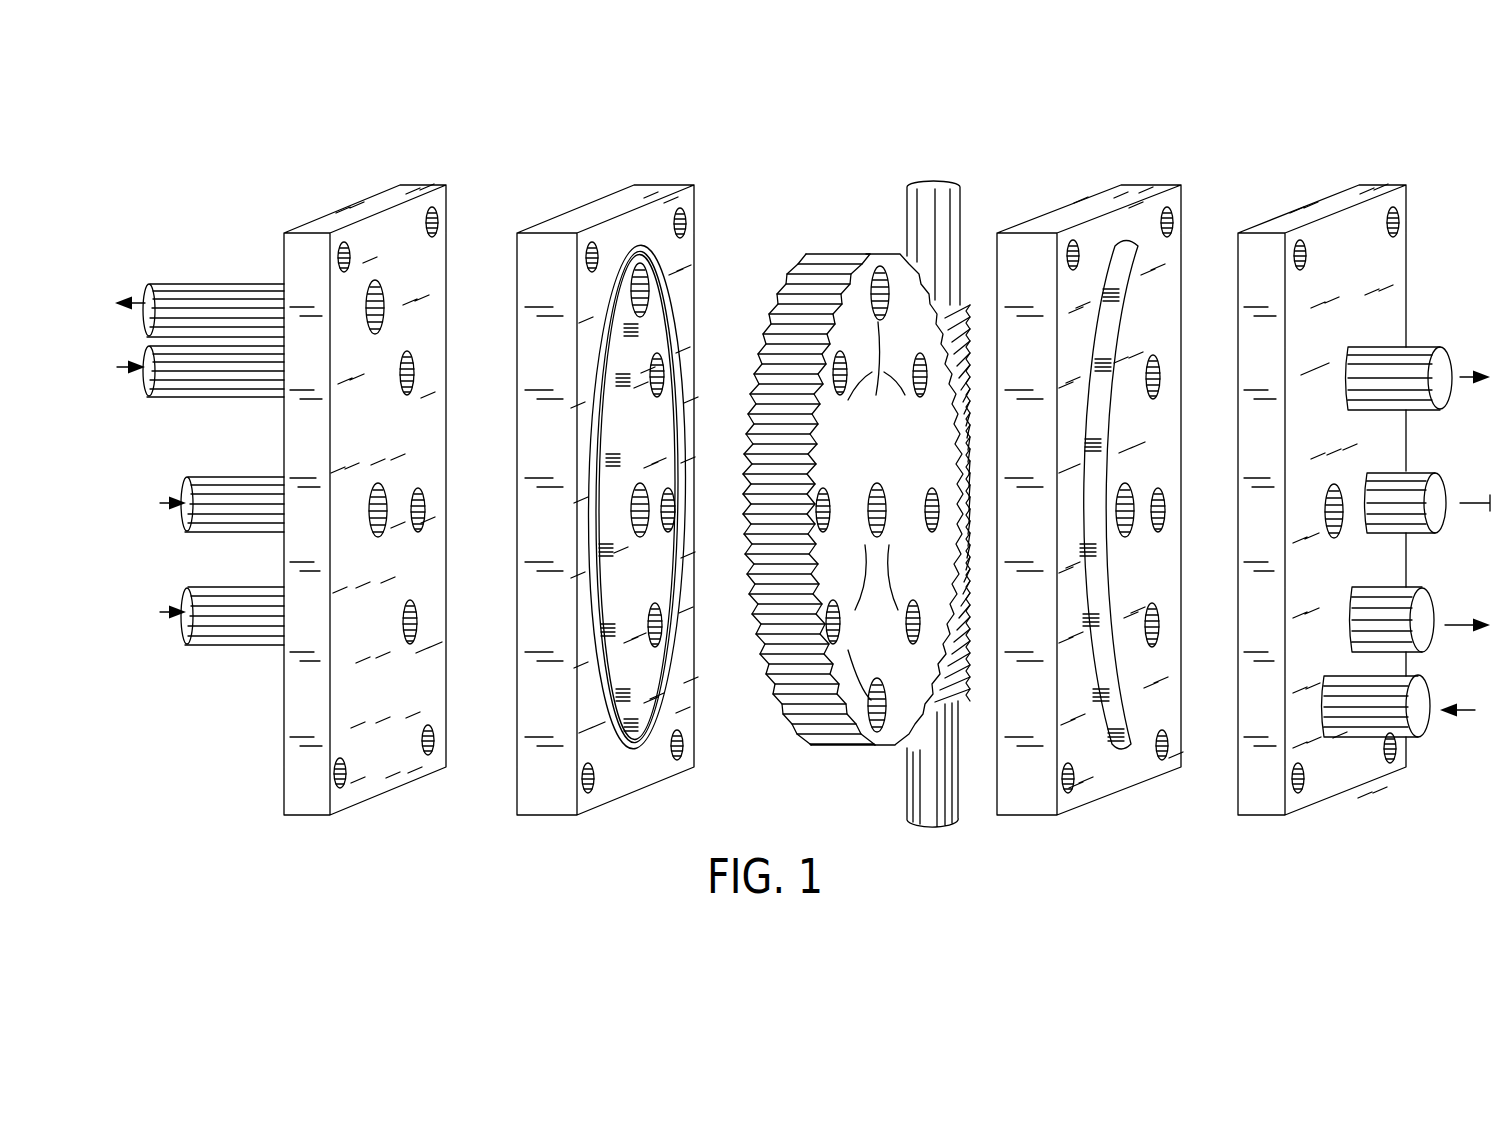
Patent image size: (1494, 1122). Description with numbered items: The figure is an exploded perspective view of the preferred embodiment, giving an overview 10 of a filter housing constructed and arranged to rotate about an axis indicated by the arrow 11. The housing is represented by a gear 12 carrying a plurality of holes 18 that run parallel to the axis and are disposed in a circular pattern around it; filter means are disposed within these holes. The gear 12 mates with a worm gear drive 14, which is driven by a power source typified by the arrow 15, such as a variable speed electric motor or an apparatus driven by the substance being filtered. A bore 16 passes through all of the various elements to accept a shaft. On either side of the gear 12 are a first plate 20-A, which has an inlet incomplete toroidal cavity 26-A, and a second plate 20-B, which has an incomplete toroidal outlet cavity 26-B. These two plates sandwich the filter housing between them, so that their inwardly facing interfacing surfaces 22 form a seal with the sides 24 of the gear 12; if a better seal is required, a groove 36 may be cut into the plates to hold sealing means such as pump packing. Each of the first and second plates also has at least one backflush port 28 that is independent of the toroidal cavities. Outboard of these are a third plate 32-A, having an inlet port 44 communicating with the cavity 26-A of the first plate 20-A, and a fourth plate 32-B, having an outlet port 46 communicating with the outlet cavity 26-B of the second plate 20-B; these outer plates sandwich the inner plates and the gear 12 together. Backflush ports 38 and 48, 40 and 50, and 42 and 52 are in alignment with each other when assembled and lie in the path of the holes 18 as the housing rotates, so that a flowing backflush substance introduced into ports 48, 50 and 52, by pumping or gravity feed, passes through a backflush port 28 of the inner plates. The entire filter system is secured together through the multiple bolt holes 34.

The filter housing overview 10 is at (820, 220).
The axis arrow 11 is at (872, 510).
The gear 12 is at (869, 746).
The worm gear drive 14 is at (945, 734).
The power source arrow 15 is at (938, 180).
The bore 16 is at (374, 536).
The holes 18 is at (912, 380).
The first plate 20-A is at (1140, 790).
The second plate 20-B is at (535, 792).
The interfacing surfaces 22 is at (650, 780).
The sides of gear 24 is at (740, 573).
The inlet incomplete toroidal cavity 26-A is at (1110, 684).
The outlet incomplete toroidal cavity 26-B is at (645, 738).
The backflush port 28 is at (409, 393).
The third plate 32-A is at (1345, 790).
The fourth plate 32-B is at (400, 788).
The bolt holes 34 is at (426, 226).
The groove 36 is at (682, 428).
The backflush port 38 is at (1416, 352).
The backflush port 40 is at (1416, 480).
The backflush port 42 is at (1412, 598).
The inlet port 44 is at (1414, 732).
The outlet port 46 is at (214, 295).
The backflush port 48 is at (206, 397).
The backflush port 50 is at (240, 490).
The backflush port 52 is at (233, 600).